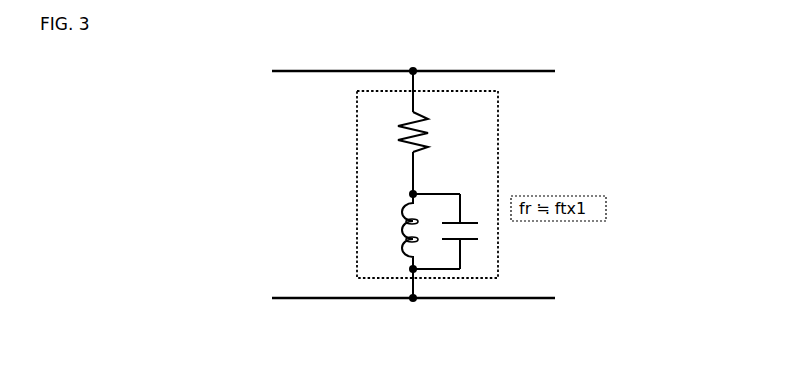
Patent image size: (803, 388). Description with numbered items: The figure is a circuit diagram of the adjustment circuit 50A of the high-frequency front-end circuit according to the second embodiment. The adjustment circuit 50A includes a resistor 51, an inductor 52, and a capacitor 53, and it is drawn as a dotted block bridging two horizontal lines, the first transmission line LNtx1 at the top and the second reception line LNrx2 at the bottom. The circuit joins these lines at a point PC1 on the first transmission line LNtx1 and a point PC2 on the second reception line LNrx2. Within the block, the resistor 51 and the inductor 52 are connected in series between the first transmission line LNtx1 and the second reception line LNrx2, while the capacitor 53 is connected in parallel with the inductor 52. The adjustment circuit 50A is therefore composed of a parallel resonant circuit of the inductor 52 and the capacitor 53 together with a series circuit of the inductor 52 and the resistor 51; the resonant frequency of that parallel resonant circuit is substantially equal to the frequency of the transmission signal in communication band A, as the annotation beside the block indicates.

The adjustment circuit 50A is at (356, 120).
The resistor 51 is at (402, 119).
The inductor 52 is at (400, 203).
The capacitor 53 is at (470, 219).
The connection point PC1 is at (415, 68).
The connection point PC2 is at (414, 301).
The first transmission line LNtx1 is at (517, 61).
The second reception line LNrx2 is at (527, 289).